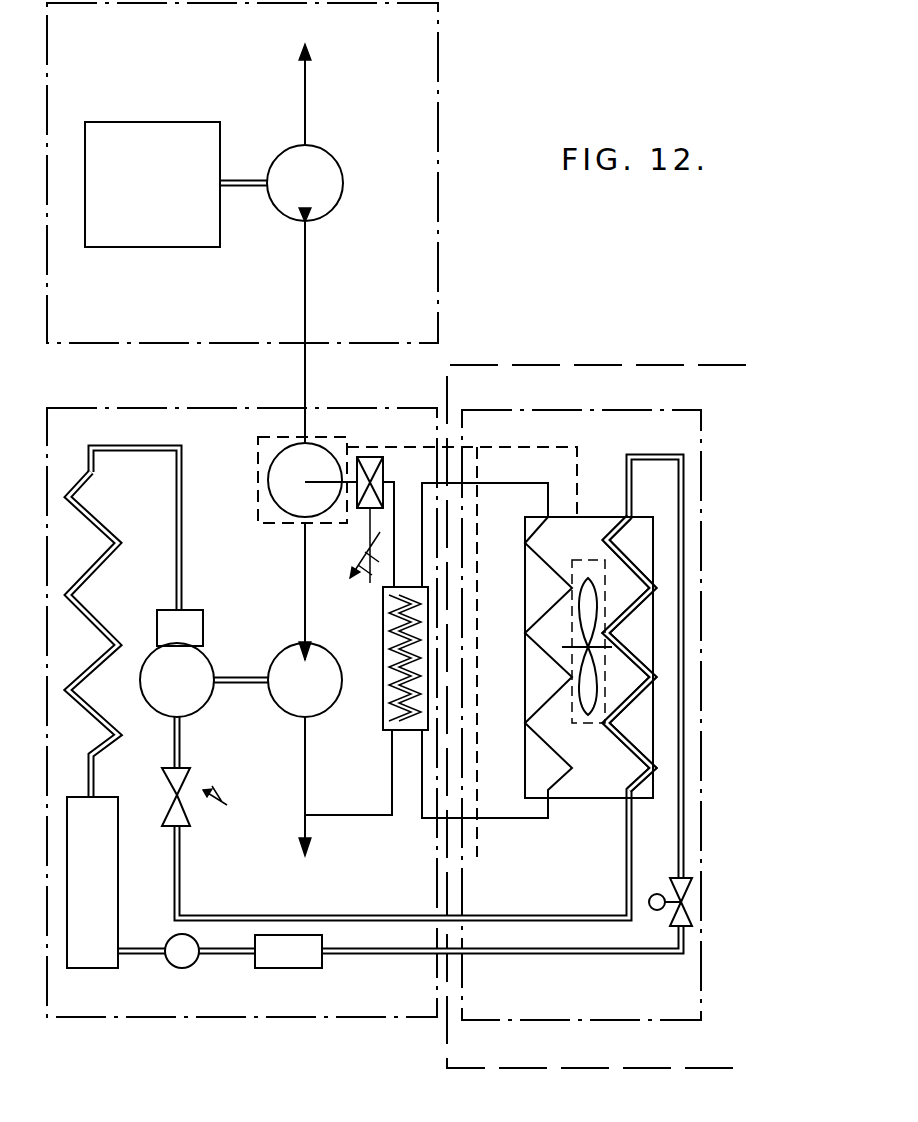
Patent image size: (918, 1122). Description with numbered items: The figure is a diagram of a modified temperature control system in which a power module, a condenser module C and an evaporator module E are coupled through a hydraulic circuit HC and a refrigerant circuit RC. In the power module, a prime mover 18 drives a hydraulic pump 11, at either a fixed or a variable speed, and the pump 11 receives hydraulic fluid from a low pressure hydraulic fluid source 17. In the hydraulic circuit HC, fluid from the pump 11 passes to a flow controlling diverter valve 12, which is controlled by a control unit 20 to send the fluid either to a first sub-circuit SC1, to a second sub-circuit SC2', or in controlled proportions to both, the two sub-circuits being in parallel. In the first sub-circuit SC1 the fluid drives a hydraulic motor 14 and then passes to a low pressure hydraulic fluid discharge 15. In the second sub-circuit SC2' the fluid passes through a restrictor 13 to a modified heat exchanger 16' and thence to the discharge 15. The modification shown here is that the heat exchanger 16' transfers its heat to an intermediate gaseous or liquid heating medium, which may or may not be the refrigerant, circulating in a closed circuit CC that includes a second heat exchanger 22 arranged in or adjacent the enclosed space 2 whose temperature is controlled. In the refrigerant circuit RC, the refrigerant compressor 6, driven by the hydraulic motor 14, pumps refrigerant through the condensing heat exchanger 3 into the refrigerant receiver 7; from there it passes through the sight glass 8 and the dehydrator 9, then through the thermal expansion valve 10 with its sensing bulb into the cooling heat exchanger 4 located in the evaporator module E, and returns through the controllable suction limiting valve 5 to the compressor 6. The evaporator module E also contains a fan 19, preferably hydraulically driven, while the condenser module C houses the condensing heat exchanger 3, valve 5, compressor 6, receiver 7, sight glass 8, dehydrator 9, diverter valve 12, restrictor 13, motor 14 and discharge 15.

The space 2 is at (686, 690).
The condensing heat exchanger 3 is at (83, 575).
The cooling heat exchanger 4 is at (625, 516).
The suction limiting valve 5 is at (200, 797).
The refrigerant compressor 6 is at (205, 663).
The refrigerant receiver 7 is at (92, 882).
The sight glass 8 is at (183, 968).
The dehydrator 9 is at (292, 965).
The thermal expansion valve with sensing bulb 10 is at (650, 903).
The hydraulic pump 11 is at (320, 172).
The flow controlling diverter valve 12 is at (258, 494).
The restrictor 13 is at (369, 455).
The hydraulic motor 14 is at (325, 717).
The low pressure hydraulic fluid discharge 15 is at (312, 855).
The modified heat exchanger 16' is at (465, 679).
The low pressure hydraulic fluid source 17 is at (308, 58).
The prime mover 18 is at (152, 184).
The fan 19 is at (597, 715).
The control unit 20 is at (480, 850).
The second heat exchanger 22 is at (514, 678).
The hydraulic circuit HC is at (300, 376).
The refrigerant circuit RC is at (178, 530).
The first sub-circuit SC1 is at (305, 606).
The second sub-circuit SC2' is at (467, 405).
The evaporator module E is at (597, 410).
The condenser module C is at (288, 1020).
The closed circuit CC is at (555, 818).